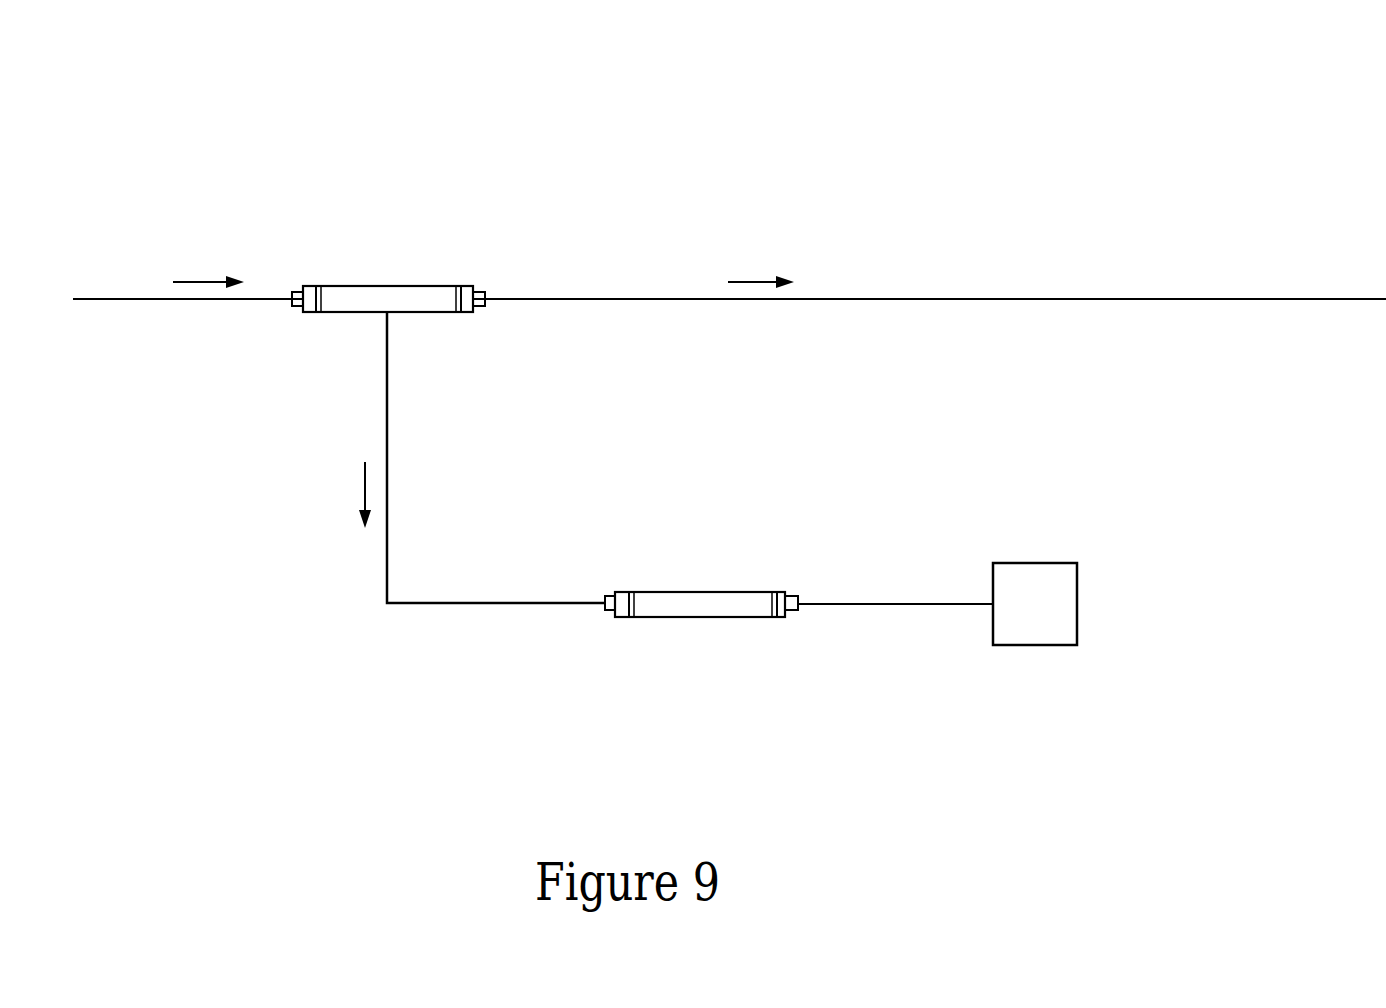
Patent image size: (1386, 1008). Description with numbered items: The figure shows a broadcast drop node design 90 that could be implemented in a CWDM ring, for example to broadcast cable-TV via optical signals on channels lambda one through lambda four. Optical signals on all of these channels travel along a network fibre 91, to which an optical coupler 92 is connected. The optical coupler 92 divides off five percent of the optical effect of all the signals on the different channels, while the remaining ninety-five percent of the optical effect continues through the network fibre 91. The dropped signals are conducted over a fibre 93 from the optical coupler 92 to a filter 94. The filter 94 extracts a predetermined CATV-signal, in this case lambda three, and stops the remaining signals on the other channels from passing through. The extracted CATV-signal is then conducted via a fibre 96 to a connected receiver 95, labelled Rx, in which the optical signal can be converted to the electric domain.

The broadcast drop node design 90 is at (1215, 63).
The network fibre 91 is at (848, 299).
The optical coupler 92 is at (410, 312).
The fibre 93 is at (457, 605).
The filter 94 is at (668, 603).
The receiver 95 is at (1033, 572).
The fibre 96 is at (880, 606).